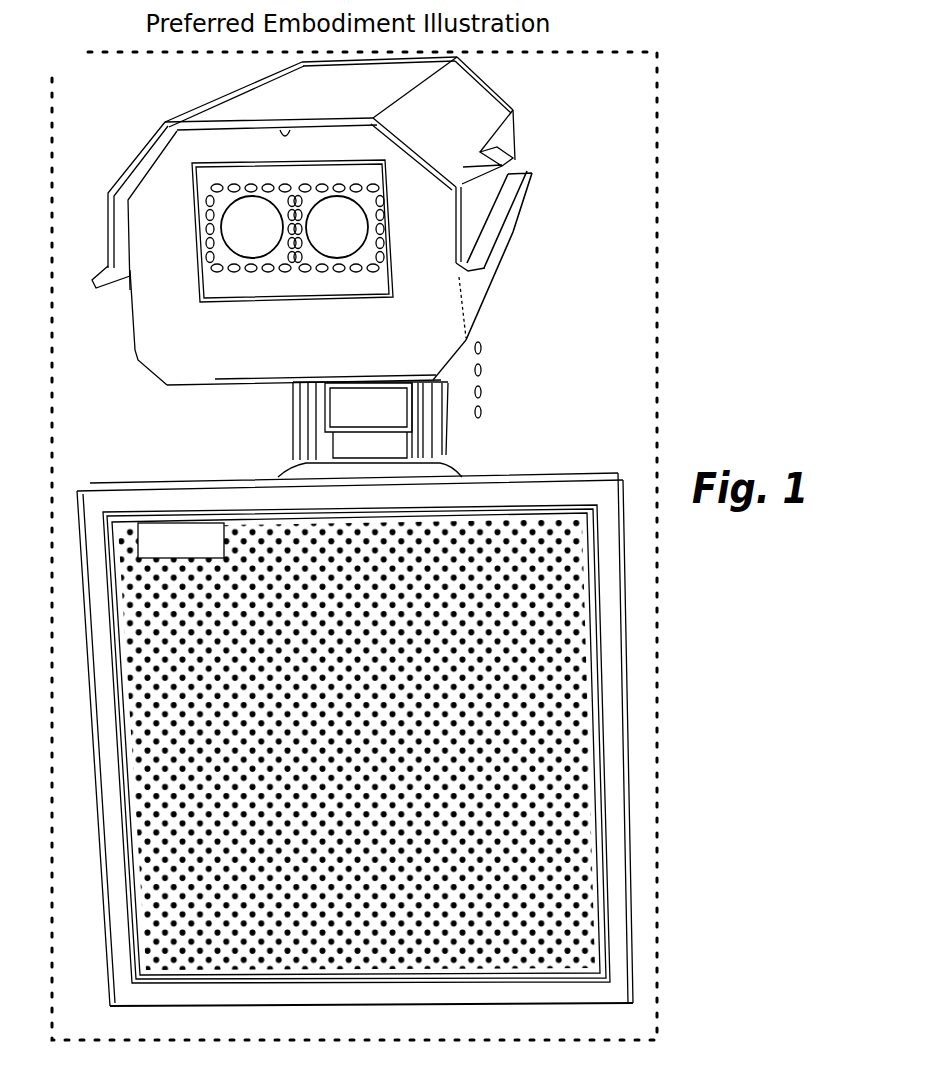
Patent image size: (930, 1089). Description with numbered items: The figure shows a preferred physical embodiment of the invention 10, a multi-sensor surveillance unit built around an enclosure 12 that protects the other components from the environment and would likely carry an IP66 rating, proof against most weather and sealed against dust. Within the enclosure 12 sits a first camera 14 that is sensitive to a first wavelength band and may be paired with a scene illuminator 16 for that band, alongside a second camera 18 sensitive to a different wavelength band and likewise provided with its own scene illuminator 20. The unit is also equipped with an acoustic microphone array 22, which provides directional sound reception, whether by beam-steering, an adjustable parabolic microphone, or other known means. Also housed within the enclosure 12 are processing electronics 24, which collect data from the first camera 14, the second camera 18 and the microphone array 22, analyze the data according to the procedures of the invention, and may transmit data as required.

The invention 10 is at (346, 541).
The enclosure 12 is at (303, 237).
The first camera 14 is at (252, 227).
The scene illuminator for that wavelength band 16 is at (251, 218).
The second camera 18 is at (337, 227).
The scene illuminator for that wavelength band 20 is at (339, 218).
The acoustic microphone array 22 is at (355, 739).
The processing electronics 24 is at (503, 154).